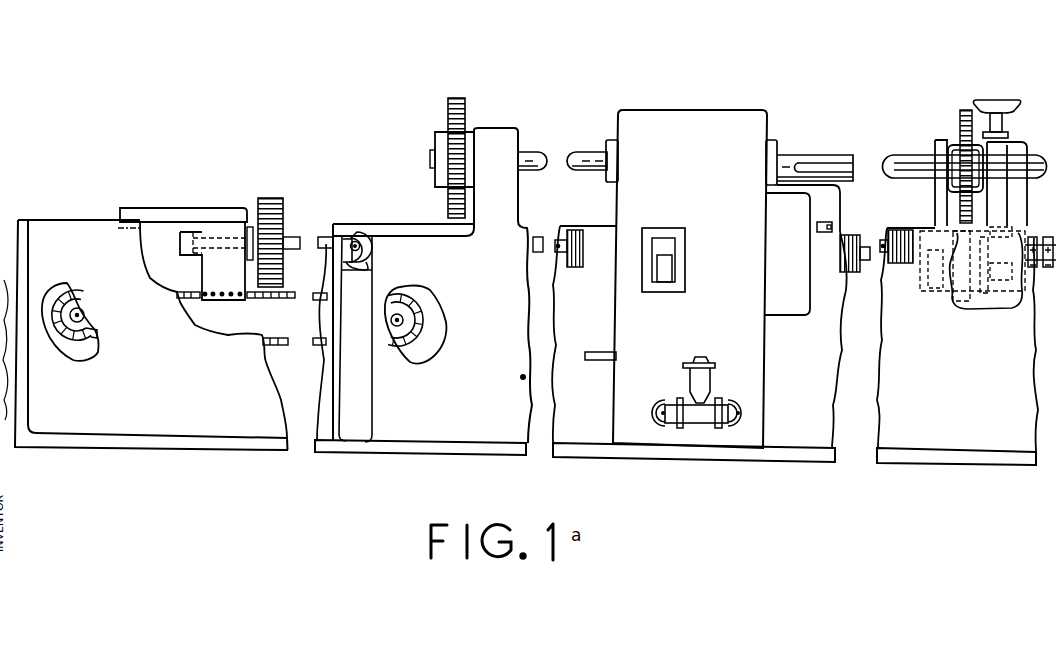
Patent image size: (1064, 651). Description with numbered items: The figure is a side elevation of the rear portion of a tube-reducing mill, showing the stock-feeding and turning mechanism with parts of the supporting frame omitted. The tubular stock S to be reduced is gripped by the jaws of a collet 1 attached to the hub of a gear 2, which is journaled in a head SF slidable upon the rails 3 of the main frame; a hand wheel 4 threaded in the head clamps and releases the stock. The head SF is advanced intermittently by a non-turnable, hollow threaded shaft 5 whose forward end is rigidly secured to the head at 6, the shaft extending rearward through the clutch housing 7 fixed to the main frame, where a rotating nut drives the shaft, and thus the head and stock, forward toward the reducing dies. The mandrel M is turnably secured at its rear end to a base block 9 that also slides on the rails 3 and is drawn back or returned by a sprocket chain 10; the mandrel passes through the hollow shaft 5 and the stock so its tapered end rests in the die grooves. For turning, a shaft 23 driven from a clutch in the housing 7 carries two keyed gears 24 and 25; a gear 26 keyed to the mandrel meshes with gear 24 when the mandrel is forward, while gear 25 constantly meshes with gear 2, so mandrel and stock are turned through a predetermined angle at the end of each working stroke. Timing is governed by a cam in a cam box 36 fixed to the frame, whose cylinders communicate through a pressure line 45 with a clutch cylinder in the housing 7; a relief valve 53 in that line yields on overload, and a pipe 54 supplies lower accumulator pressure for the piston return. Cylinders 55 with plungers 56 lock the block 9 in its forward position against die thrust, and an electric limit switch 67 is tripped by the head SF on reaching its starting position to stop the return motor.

The collet 1 is at (985, 302).
The gear 2 is at (938, 296).
The rails 3 is at (58, 220).
The hand wheel 4 is at (1000, 100).
The non-turnable threaded shaft 5 is at (572, 230).
The point of attachment 6 is at (921, 268).
The clutch housing 7 is at (690, 279).
The base block 9 is at (228, 198).
The sprocket chain 10 is at (266, 299).
The shaft 23 is at (533, 152).
The gear 24 is at (456, 98).
The gear 25 is at (962, 110).
The gear 26 is at (273, 198).
The cam box 36 is at (840, 197).
The pressure line 45 is at (702, 426).
The relief valve 53 is at (702, 360).
The pipe 54 is at (600, 362).
The cylinder 55 is at (363, 234).
The plunger 56 is at (354, 242).
The electric limit switch 67 is at (833, 227).
The mandrel M is at (293, 238).
The tubular stock S is at (1042, 238).
The head SF is at (1031, 135).